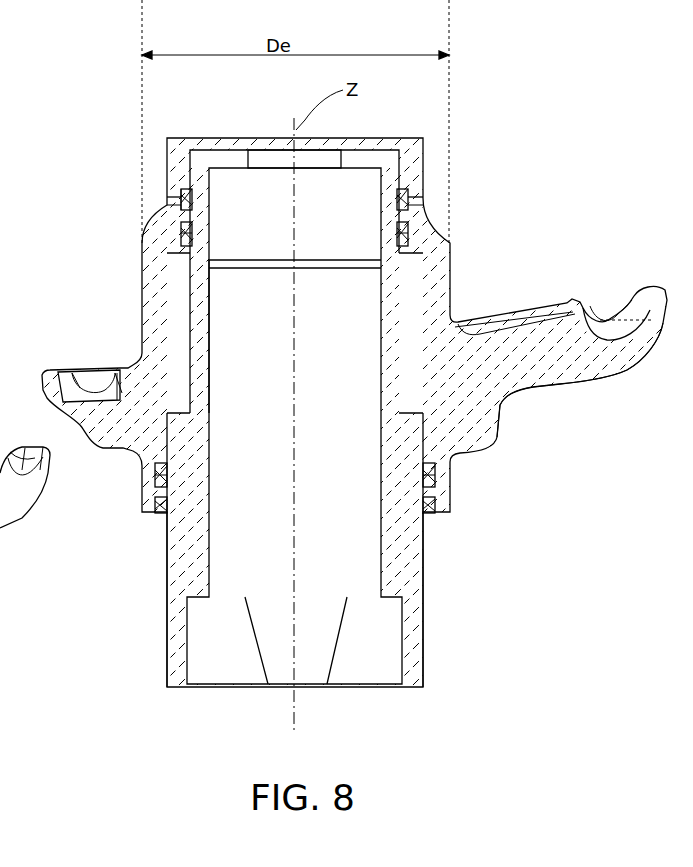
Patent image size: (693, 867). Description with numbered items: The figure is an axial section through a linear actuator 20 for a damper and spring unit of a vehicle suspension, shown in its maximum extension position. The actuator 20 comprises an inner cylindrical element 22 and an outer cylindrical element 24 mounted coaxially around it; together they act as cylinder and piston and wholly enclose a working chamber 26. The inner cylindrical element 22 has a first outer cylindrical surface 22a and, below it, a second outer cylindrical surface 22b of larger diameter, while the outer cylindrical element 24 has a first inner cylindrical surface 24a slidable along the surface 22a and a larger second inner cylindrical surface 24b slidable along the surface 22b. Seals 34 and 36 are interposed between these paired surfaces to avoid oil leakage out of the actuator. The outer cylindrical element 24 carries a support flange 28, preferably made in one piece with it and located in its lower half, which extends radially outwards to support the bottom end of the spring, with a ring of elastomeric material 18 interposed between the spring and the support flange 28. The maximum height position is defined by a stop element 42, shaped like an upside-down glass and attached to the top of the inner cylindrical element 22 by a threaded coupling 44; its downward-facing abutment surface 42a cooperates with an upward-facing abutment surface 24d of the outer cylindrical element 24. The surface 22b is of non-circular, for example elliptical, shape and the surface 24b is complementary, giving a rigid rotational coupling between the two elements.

The ring of elastomeric material 18 is at (612, 315).
The actuator 20 is at (122, 266).
The inner cylindrical element 22 is at (408, 300).
The first outer cylindrical surface 22a is at (188, 313).
The second outer cylindrical surface 22b is at (167, 590).
The outer cylindrical element 24 is at (452, 247).
The first inner cylindrical surface 24a is at (193, 218).
The second inner cylindrical surface 24b is at (193, 412).
The abutment surface 24d is at (181, 196).
The working chamber 26 is at (455, 313).
The support flange 28 is at (586, 372).
The seal 34 is at (194, 233).
The seal 36 is at (162, 470).
The stop element 42 is at (425, 172).
The abutment surface 42a is at (425, 211).
The threaded coupling 44 is at (180, 190).